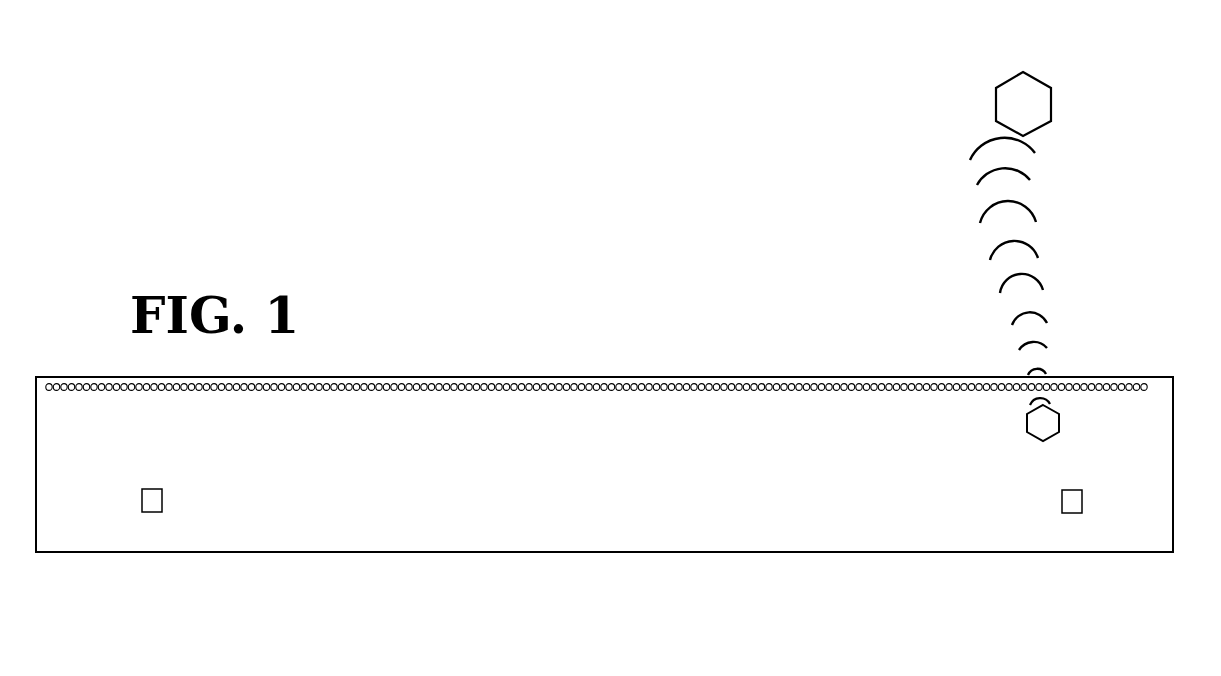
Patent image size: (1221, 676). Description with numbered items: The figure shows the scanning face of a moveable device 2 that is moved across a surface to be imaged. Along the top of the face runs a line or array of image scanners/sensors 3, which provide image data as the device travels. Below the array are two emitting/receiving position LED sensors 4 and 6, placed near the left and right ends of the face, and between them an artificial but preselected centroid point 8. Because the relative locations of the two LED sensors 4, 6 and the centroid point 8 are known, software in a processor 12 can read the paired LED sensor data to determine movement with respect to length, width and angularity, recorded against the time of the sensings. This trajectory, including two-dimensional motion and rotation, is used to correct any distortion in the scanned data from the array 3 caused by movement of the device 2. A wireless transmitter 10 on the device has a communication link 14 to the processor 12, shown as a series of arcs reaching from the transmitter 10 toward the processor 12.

The moveable device 2 is at (604, 503).
The image scanners/sensors 3 is at (596, 416).
The emitting/receiving position LED sensor 4 is at (170, 499).
The emitting/receiving position LED sensor 6 is at (1090, 500).
The centroid point 8 is at (520, 495).
The wireless transmitter 10 is at (1076, 422).
The processor 12 is at (1060, 104).
The communication link 14 is at (1052, 256).